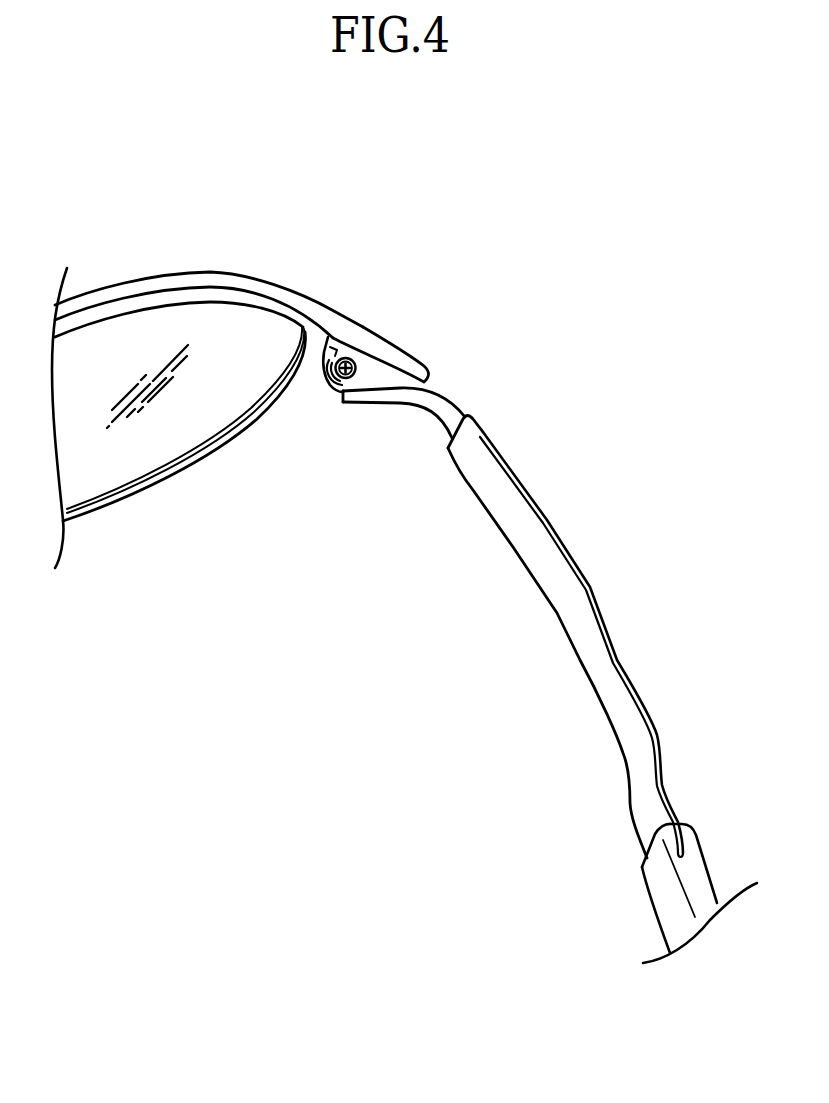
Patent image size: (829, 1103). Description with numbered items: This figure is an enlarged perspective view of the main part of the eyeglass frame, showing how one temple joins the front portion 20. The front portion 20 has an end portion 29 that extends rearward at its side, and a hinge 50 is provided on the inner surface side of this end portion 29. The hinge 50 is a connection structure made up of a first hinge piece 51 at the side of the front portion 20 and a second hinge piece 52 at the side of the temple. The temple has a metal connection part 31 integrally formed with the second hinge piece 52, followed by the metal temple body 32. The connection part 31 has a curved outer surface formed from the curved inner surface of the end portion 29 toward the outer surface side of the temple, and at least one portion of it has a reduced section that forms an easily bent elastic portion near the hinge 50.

The front portion 20 is at (188, 273).
The end portion 29 is at (405, 343).
The connection part 31 is at (457, 394).
The temple body 32 is at (591, 588).
The hinge 50 is at (309, 461).
The first hinge piece 51 is at (328, 348).
The second hinge piece 52 is at (340, 385).